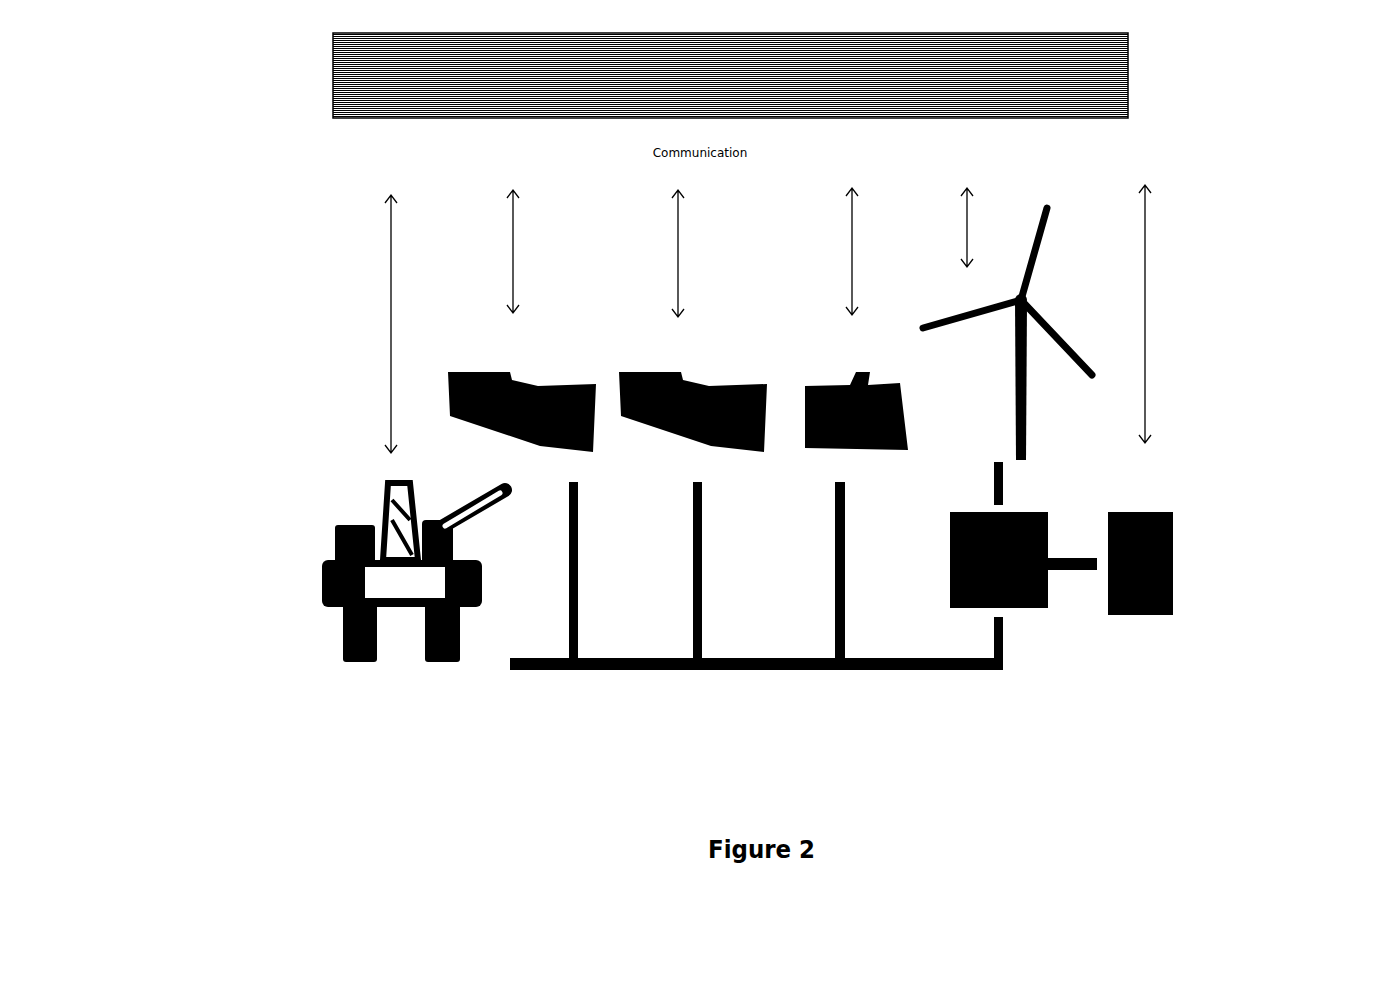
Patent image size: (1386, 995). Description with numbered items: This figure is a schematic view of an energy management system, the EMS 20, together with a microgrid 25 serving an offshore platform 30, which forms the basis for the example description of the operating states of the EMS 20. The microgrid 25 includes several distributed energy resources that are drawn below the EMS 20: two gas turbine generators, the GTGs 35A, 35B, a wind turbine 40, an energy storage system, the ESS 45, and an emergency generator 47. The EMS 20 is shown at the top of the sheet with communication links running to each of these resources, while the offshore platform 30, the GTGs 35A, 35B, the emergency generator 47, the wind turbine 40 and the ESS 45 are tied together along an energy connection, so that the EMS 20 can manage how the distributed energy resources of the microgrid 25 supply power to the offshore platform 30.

The energy management system (EMS) 20 is at (730, 75).
The microgrid 25 is at (243, 750).
The offshore platform 30 is at (298, 508).
The gas turbine generator (GTG) 35A is at (447, 367).
The gas turbine generator (GTG) 35B is at (608, 358).
The wind turbine 40 is at (1070, 312).
The energy storage system (ESS) 45 is at (1183, 535).
The emergency generator 47 is at (870, 450).